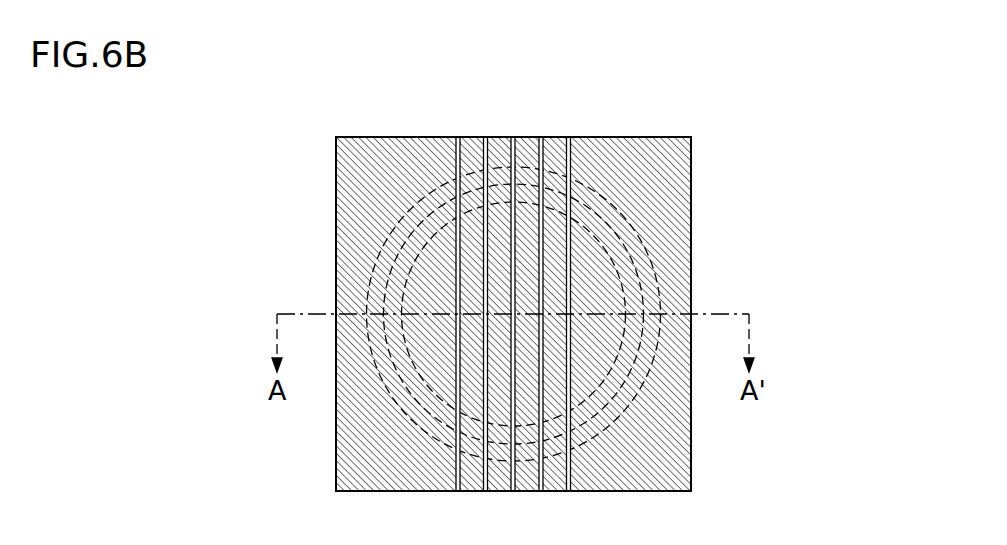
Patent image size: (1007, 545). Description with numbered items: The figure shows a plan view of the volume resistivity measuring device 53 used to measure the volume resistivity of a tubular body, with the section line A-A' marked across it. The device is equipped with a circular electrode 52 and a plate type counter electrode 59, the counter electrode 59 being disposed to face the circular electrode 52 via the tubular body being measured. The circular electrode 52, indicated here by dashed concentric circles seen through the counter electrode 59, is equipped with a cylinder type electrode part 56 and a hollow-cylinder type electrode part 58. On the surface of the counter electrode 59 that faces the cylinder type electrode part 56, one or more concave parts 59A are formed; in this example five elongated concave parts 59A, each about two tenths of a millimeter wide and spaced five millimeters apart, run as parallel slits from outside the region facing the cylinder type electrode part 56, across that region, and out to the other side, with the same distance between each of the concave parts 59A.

The circular electrode 52 is at (636, 396).
The volume resistivity measuring device 53 is at (723, 98).
The cylinder type electrode part 56 is at (630, 260).
The hollow-cylinder type electrode part 58 is at (627, 220).
The counter electrode 59 is at (677, 170).
The concave parts 59A is at (513, 137).